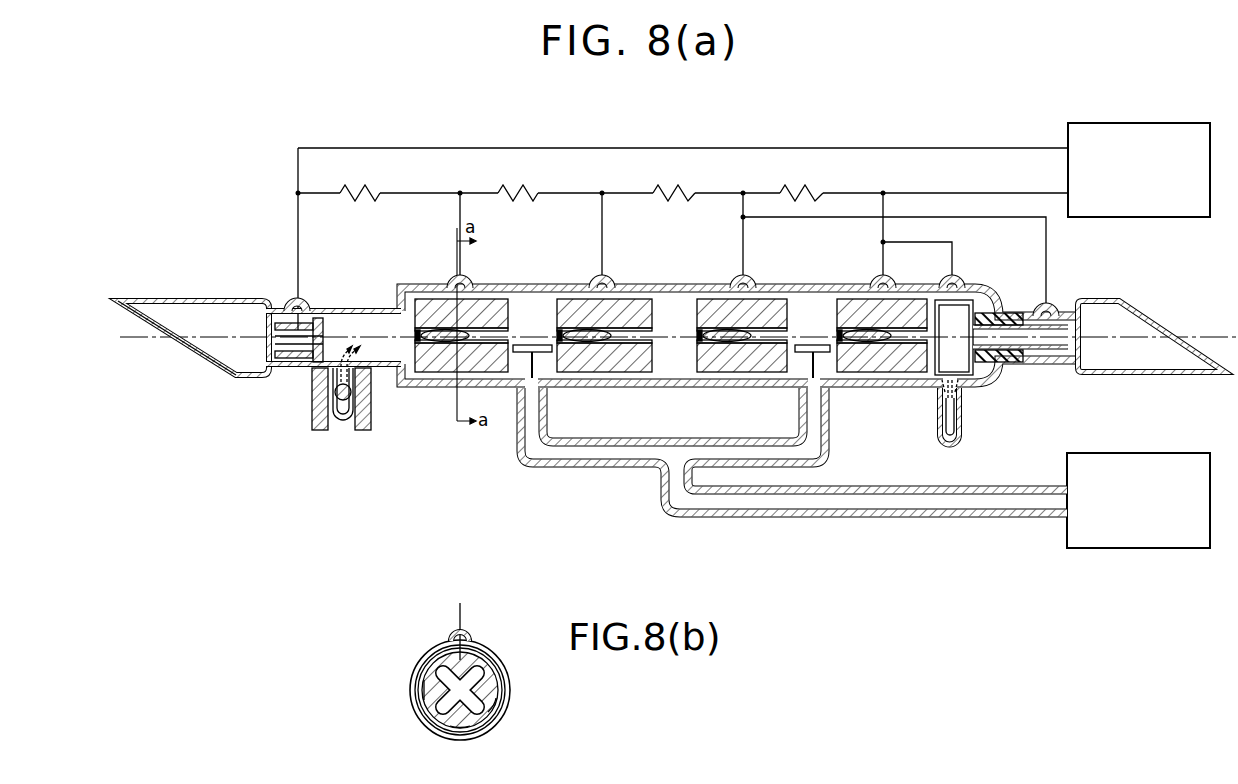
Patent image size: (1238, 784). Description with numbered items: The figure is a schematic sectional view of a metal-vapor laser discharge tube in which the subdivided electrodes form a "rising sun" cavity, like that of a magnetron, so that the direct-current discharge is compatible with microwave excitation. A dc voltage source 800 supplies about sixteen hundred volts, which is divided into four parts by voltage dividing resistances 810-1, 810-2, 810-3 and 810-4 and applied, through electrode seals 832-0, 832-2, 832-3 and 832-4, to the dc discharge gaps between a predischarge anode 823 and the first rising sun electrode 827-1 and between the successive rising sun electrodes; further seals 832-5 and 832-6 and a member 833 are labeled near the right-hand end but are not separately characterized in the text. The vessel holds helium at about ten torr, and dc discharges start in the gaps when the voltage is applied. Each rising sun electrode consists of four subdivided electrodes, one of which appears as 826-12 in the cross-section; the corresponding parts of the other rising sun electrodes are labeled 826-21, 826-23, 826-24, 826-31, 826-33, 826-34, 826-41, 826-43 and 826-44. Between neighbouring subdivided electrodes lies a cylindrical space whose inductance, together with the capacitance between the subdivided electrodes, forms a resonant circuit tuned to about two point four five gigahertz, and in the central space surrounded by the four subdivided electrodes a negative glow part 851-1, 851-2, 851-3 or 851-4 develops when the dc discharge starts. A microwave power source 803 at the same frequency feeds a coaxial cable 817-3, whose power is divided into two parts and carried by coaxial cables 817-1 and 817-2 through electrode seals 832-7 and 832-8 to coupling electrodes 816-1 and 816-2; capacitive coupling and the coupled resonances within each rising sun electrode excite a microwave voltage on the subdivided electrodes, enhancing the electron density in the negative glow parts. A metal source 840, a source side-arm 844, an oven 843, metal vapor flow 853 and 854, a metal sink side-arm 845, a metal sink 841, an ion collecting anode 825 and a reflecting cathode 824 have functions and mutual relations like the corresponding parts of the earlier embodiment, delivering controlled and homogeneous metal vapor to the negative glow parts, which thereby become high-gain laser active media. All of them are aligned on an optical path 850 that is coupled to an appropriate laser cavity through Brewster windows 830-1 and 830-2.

The dc voltage source 800 is at (1100, 123).
The microwave power source 803 is at (1152, 453).
The voltage dividing resistance 810-1 is at (370, 193).
The voltage dividing resistance 810-2 is at (528, 193).
The voltage dividing resistance 810-3 is at (678, 193).
The voltage dividing resistance 810-4 is at (810, 193).
The optical path 850 is at (213, 330).
The Brewster window 830-1 is at (188, 360).
The Brewster window 830-2 is at (1145, 315).
The predischarge anode 823 is at (290, 360).
The metal vapor flow 853 is at (335, 393).
The source side-arm 844 is at (312, 425).
The metal source 840 is at (343, 401).
The oven 843 is at (363, 430).
The electrode seal 832-0 is at (306, 296).
The electrode seal 832-2 is at (606, 276).
The electrode seal 832-3 is at (747, 276).
The electrode seal 832-4 is at (887, 276).
The stub 832-5 is at (956, 276).
The stub 832-6 is at (1050, 303).
The electrode seal 832-7 is at (517, 430).
The electrode seal 832-8 is at (830, 430).
The subdivided electrode 826-12 is at (423, 688).
The dielectric member 826-21 is at (620, 372).
The dielectric member 826-23 is at (640, 330).
The dielectric member 826-24 is at (650, 372).
The dielectric member 826-31 is at (720, 300).
The dielectric member 826-33 is at (740, 372).
The dielectric member 826-34 is at (770, 372).
The dielectric member 826-41 is at (850, 300).
The dielectric member 826-43 is at (880, 372).
The dielectric member 826-44 is at (905, 372).
The rising sun electrode 827-1 is at (498, 690).
The negative glow part 851-1 is at (475, 300).
The negative glow part 851-2 is at (610, 300).
The negative glow part 851-3 is at (760, 300).
The negative glow part 851-4 is at (890, 300).
The coupling electrode 816-1 is at (535, 345).
The coupling electrode 816-2 is at (813, 345).
The coaxial cable 817-1 is at (556, 468).
The coaxial cable 817-2 is at (828, 462).
The coaxial cable 817-3 is at (1010, 518).
The ion collecting anode 825 is at (958, 300).
The coaxial line 833 is at (995, 313).
The reflecting cathode 824 is at (1050, 313).
The metal vapor flow 854 is at (963, 395).
The metal sink side-arm 845 is at (962, 418).
The metal sink 841 is at (962, 440).